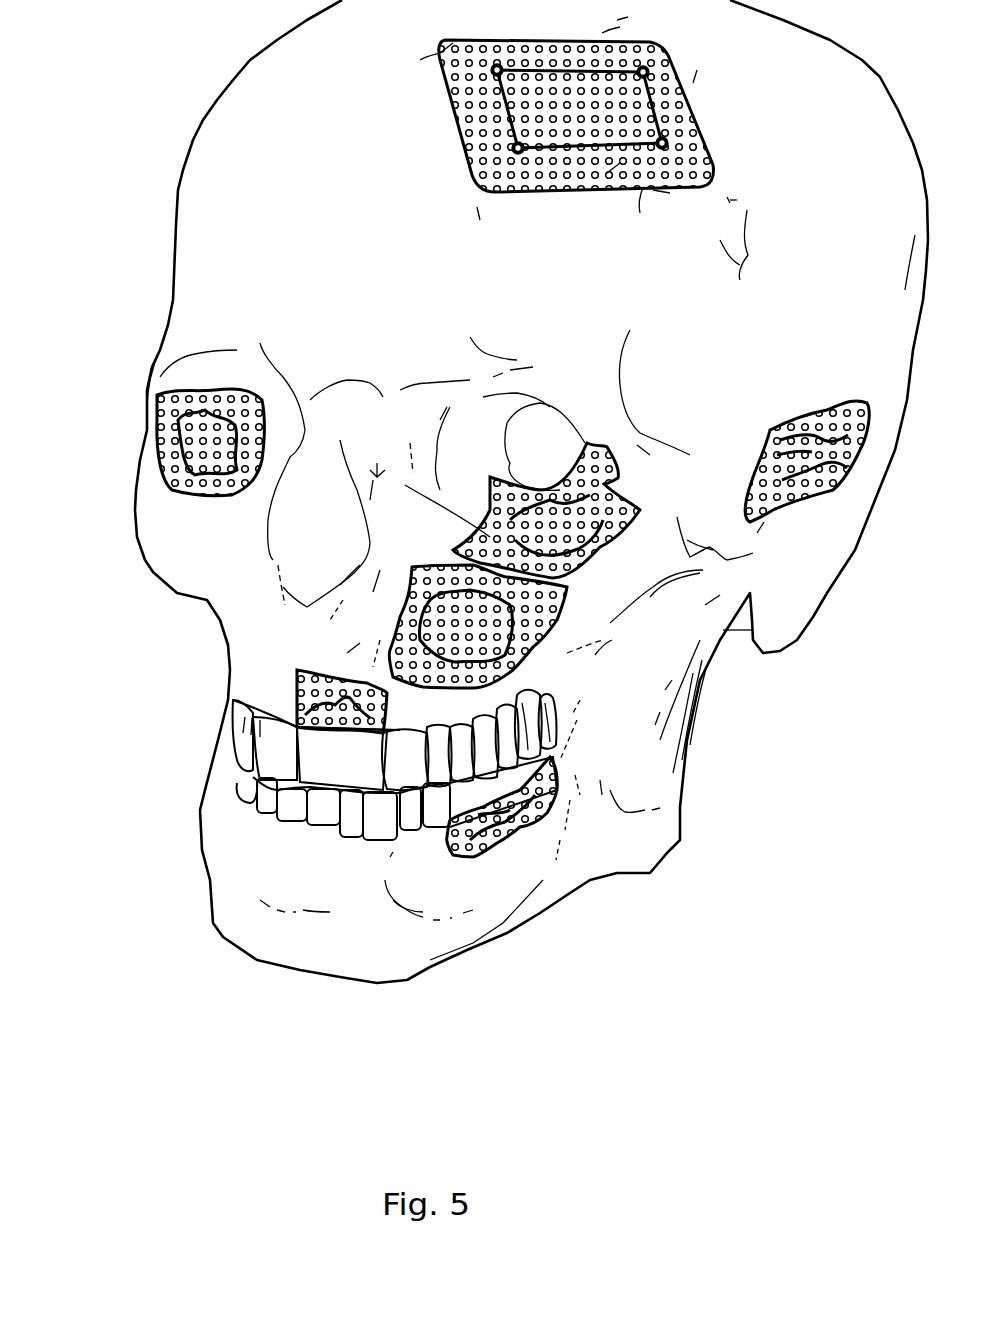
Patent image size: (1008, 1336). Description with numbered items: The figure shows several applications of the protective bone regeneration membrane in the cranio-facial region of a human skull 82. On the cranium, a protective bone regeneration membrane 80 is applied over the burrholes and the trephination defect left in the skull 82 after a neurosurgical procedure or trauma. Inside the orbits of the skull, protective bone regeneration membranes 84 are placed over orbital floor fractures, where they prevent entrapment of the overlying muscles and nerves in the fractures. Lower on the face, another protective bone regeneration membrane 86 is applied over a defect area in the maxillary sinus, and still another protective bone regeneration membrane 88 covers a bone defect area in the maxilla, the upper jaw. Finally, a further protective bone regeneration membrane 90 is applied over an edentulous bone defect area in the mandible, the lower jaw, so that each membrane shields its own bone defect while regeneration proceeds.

The protective bone regeneration membrane 80 is at (770, 440).
The human skull 82 is at (192, 153).
The protective bone regeneration membranes 84 is at (490, 497).
The protective bone regeneration membrane 86 is at (522, 667).
The protective bone regeneration membrane 88 is at (307, 673).
The protective bone regeneration membrane 90 is at (490, 843).